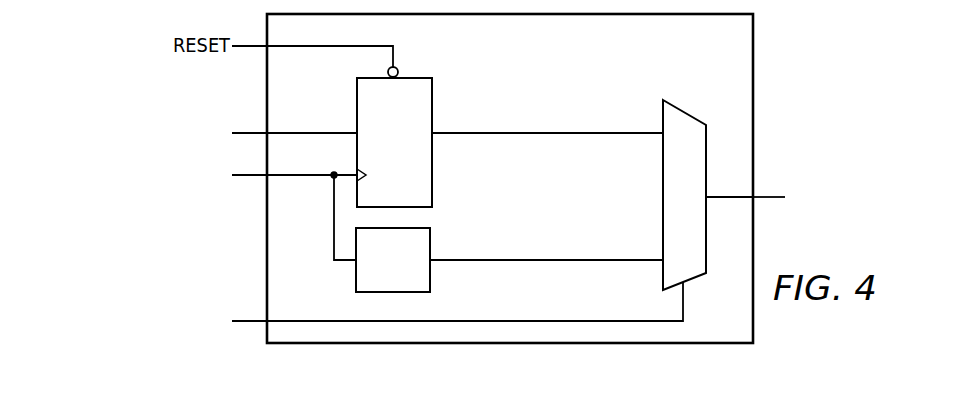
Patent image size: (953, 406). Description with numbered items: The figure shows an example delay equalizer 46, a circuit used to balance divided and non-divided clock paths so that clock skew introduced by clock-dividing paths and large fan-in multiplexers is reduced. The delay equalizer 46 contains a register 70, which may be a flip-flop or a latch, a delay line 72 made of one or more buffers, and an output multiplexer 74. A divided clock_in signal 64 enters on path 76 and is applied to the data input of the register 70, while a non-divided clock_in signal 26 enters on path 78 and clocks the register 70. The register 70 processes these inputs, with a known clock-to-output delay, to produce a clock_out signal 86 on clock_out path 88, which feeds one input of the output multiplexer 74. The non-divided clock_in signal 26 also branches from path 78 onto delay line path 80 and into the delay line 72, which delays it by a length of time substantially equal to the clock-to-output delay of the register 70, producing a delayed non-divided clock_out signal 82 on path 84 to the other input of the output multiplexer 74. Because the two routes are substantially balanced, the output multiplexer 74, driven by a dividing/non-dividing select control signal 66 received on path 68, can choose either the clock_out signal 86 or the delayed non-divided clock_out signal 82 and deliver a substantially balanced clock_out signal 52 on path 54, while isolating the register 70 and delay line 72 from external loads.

The delay equalizer 46 is at (806, 92).
The register 70 is at (420, 72).
The divided clock_in signal 64 is at (130, 117).
The path 76 is at (313, 130).
The non-divided clock_in signal 26 is at (181, 188).
The path 78 is at (312, 179).
The delay line path 80 is at (333, 240).
The delay line 72 is at (355, 278).
The clock_out signal 86 is at (578, 98).
The clock_out path 88 is at (549, 135).
The delayed non-divided clock_out signal 82 is at (614, 200).
The path 84 is at (548, 262).
The output multiplexer 74 is at (684, 108).
The path 54 is at (716, 196).
The substantially balanced clock_out signal 52 is at (822, 186).
The dividing/non-dividing select control signal 66 is at (176, 349).
The path 68 is at (686, 302).